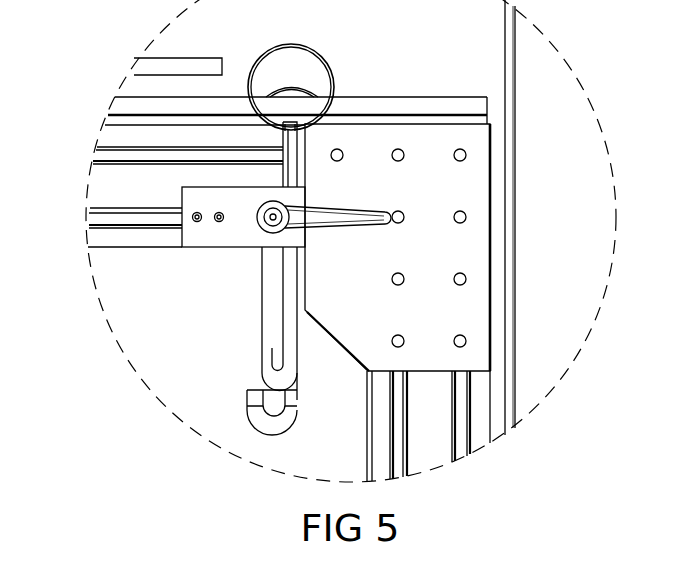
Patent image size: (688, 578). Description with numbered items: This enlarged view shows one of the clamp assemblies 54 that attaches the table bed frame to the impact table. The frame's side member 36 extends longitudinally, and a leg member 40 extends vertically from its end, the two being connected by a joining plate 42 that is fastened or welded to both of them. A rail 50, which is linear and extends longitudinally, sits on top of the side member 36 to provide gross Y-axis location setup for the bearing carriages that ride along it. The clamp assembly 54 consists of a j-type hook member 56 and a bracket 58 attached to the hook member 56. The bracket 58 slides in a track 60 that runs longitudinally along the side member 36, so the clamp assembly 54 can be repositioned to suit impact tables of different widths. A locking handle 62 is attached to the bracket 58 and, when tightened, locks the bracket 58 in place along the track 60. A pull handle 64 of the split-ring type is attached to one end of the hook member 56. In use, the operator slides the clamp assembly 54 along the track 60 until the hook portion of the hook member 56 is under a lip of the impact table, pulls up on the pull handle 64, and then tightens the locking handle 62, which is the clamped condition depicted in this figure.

The side member 36 is at (106, 191).
The leg member 40 is at (428, 440).
The joining plate 42 is at (476, 255).
The rail 50 is at (400, 104).
The clamp assembly 54 is at (212, 186).
The hook member 56 is at (290, 352).
The bracket 58 is at (228, 237).
The track 60 is at (116, 212).
The locking handle 62 is at (360, 213).
The pull handle 64 is at (266, 50).